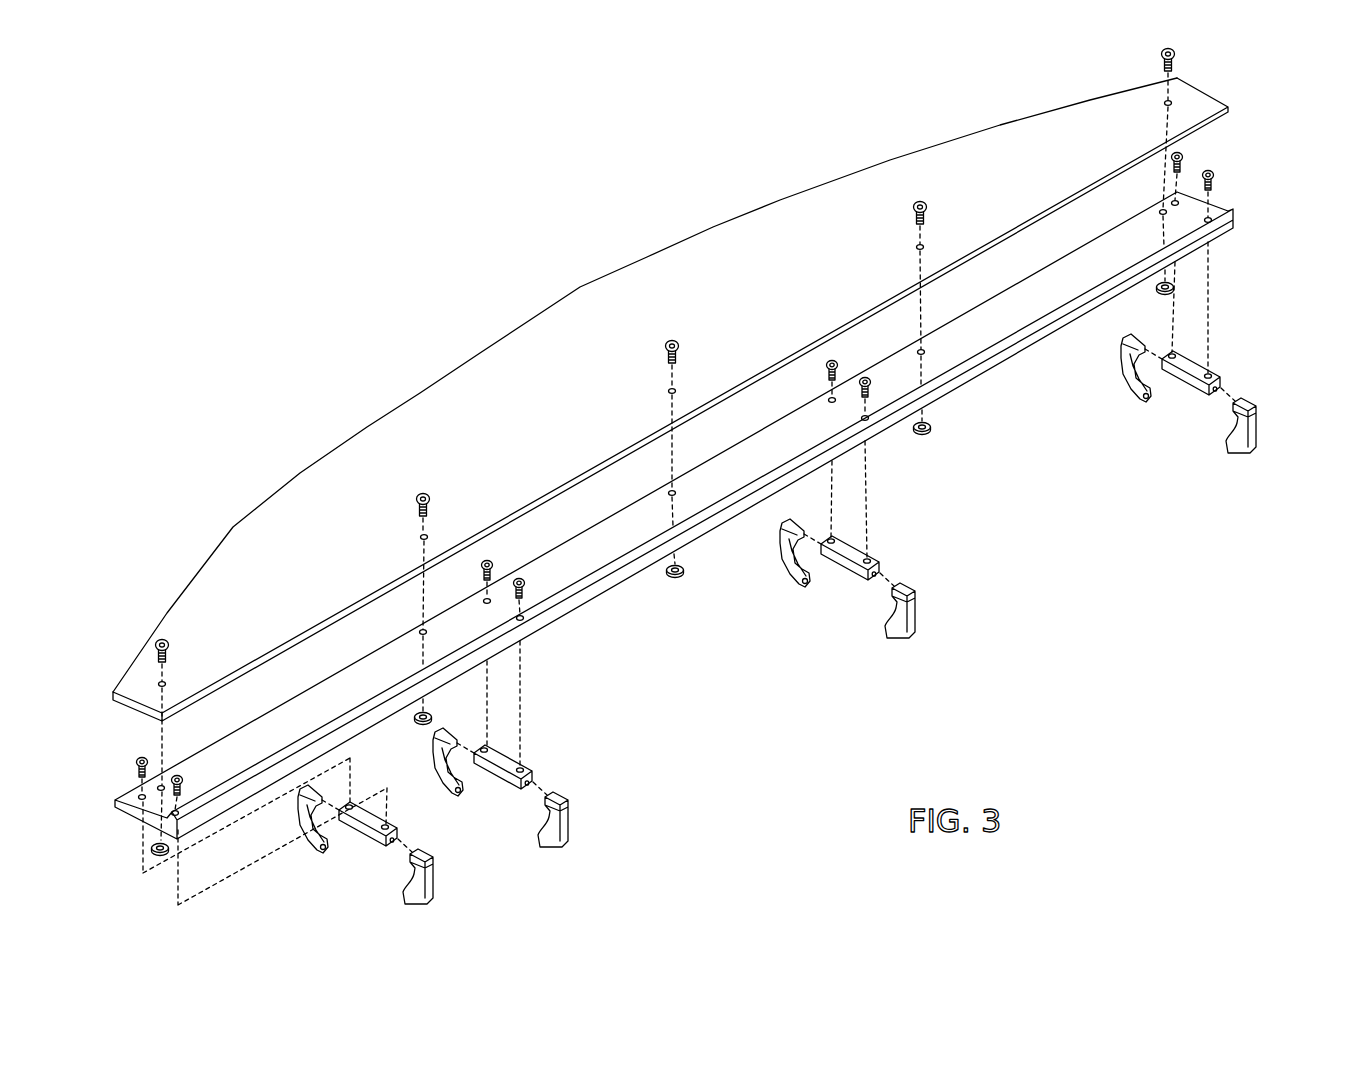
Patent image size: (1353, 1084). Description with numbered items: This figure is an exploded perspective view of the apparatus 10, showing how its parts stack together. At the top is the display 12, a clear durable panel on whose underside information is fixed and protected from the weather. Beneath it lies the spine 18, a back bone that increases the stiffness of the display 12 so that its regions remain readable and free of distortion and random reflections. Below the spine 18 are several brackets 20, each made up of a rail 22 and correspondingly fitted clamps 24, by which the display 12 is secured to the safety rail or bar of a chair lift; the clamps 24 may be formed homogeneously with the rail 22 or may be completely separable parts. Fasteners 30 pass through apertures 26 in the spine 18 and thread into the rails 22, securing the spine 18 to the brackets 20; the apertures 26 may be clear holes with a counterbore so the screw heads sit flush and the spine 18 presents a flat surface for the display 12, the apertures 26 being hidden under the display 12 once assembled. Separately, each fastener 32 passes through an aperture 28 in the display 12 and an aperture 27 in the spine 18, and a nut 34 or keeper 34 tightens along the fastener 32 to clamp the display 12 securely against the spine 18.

The apparatus 10 is at (478, 219).
The display 12 is at (647, 277).
The spine 18 is at (603, 587).
The bracket 20 is at (722, 575).
The rail 22 is at (400, 828).
The clamp 24 is at (434, 865).
The aperture 26 is at (170, 814).
The aperture 27 is at (161, 784).
The aperture 28 is at (157, 683).
The fastener 30 is at (134, 761).
The fastener 32 is at (171, 646).
The nut 34 is at (153, 854).